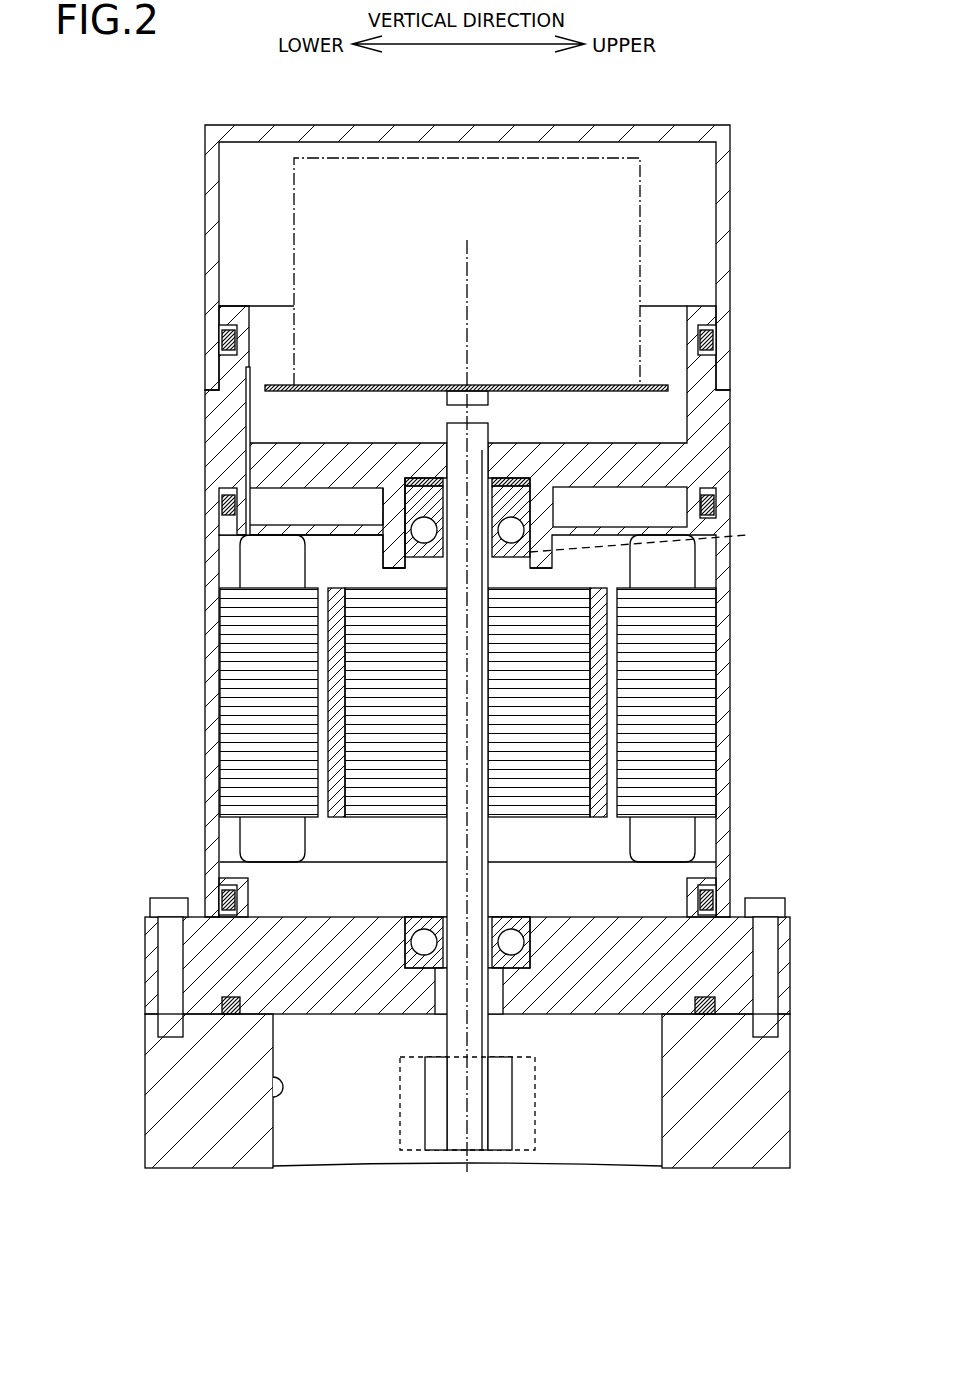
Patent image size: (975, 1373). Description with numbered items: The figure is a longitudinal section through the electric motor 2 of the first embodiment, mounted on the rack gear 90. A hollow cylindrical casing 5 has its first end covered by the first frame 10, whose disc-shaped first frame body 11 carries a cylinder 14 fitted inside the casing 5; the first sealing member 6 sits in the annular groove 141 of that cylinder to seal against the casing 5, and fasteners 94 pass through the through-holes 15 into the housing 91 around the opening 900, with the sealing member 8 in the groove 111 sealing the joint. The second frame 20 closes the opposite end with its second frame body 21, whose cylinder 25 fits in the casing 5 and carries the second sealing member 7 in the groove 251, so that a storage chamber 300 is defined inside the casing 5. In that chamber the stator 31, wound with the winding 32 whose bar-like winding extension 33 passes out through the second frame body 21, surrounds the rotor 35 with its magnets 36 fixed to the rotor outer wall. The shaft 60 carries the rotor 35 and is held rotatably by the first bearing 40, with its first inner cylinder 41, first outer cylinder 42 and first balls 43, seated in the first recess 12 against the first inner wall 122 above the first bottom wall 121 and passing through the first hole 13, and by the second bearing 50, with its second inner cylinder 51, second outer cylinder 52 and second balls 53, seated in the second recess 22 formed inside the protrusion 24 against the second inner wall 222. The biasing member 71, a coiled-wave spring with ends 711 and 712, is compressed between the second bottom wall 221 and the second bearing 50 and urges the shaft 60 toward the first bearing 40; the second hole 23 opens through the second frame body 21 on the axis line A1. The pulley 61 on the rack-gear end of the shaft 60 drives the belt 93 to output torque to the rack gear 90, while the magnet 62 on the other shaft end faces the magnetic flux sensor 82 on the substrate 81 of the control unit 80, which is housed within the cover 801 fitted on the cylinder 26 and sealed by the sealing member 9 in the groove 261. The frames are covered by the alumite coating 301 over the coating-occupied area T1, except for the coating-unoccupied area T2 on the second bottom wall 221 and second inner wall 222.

The electric motor 2 is at (678, 84).
The casing 5 is at (565, 702).
The first sealing member 6 is at (771, 901).
The second sealing member 7 is at (726, 504).
The sealing member 8 is at (708, 1014).
The sealing member 9 is at (716, 340).
The first frame 10 is at (506, 965).
The first frame body 11 is at (792, 1005).
The first recess 12 is at (542, 945).
The first hole 13 is at (525, 761).
The cylinder 14 is at (186, 873).
The through-holes 15 is at (170, 990).
The second frame 20 is at (531, 611).
The second frame body 21 is at (672, 611).
The second recess 22 is at (611, 573).
The second hole 23 is at (497, 436).
The protrusion 24 is at (390, 540).
The cylinder 25 is at (174, 501).
The cylinder 26 is at (467, 240).
The stator 31 is at (230, 703).
The winding 32 is at (252, 580).
The winding extension 33 is at (252, 408).
The rotor 35 is at (600, 710).
The magnets 36 is at (665, 760).
The first bearing 40 is at (428, 1037).
The first inner cylinder 41 is at (428, 917).
The first outer cylinder 42 is at (428, 922).
The first balls 43 is at (453, 922).
The second bearing 50 is at (427, 494).
The second inner cylinder 51 is at (395, 550).
The second outer cylinder 52 is at (427, 536).
The second balls 53 is at (718, 512).
The shaft 60 is at (476, 1141).
The pulley 61 is at (500, 1126).
The magnet 62 is at (455, 393).
The biasing member 71 is at (378, 491).
The control unit 80 is at (676, 226).
The substrate 81 is at (466, 348).
The magnetic flux sensor 82 is at (479, 386).
The rack gear 90 is at (521, 1091).
The housing 91 is at (760, 1100).
The belt 93 is at (532, 1132).
The fasteners 94 is at (160, 908).
The groove 111 is at (228, 1012).
The first bottom wall 121 is at (792, 958).
The first inner wall 122 is at (530, 916).
The annular groove 141 is at (230, 884).
The second bottom wall 221 is at (698, 442).
The second inner wall 222 is at (553, 575).
The annular groove 251 is at (224, 498).
The annular groove 261 is at (224, 343).
The storage chamber 300 is at (480, 698).
The coating 301 is at (207, 395).
The end 711 is at (416, 478).
The end 712 is at (383, 512).
The cover 801 is at (724, 142).
The opening 900 is at (272, 1088).
The axis line A1 is at (470, 268).
The coating-occupied area T1 is at (207, 425).
The coating-unoccupied area T2 is at (658, 537).